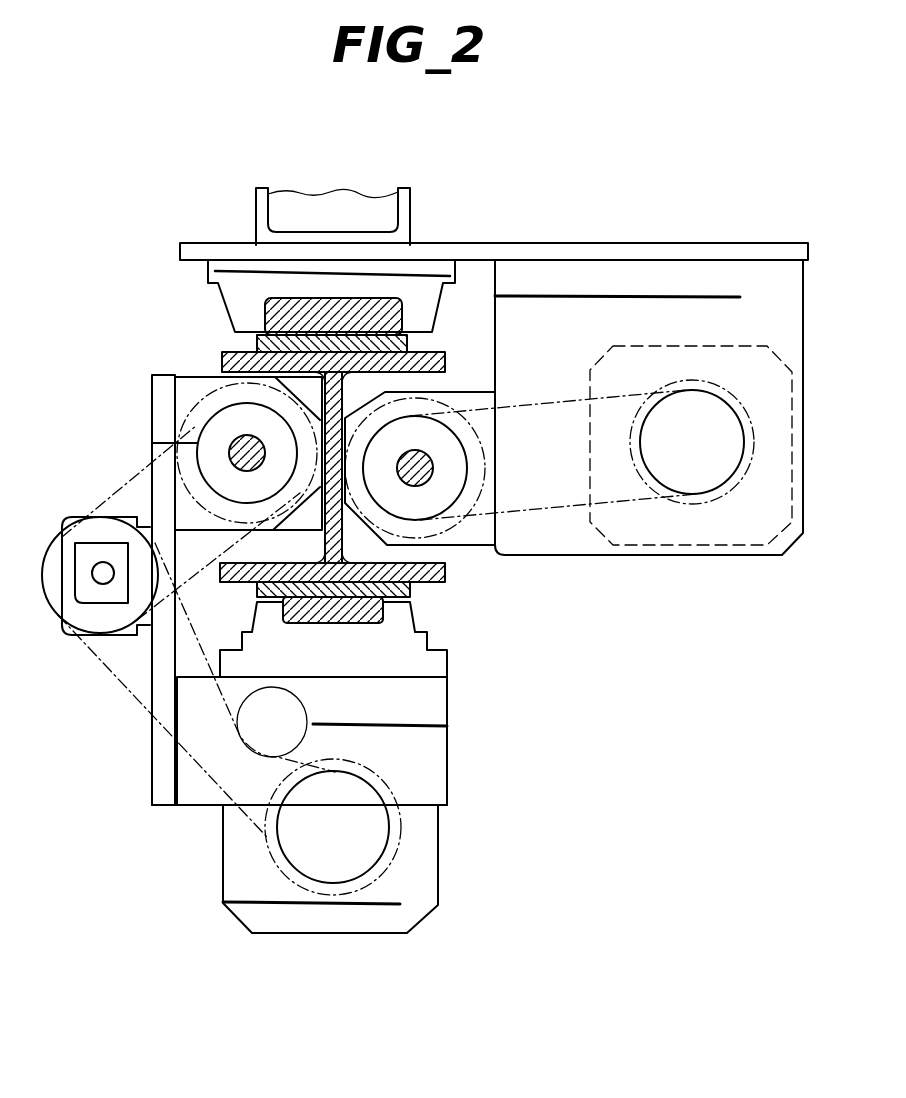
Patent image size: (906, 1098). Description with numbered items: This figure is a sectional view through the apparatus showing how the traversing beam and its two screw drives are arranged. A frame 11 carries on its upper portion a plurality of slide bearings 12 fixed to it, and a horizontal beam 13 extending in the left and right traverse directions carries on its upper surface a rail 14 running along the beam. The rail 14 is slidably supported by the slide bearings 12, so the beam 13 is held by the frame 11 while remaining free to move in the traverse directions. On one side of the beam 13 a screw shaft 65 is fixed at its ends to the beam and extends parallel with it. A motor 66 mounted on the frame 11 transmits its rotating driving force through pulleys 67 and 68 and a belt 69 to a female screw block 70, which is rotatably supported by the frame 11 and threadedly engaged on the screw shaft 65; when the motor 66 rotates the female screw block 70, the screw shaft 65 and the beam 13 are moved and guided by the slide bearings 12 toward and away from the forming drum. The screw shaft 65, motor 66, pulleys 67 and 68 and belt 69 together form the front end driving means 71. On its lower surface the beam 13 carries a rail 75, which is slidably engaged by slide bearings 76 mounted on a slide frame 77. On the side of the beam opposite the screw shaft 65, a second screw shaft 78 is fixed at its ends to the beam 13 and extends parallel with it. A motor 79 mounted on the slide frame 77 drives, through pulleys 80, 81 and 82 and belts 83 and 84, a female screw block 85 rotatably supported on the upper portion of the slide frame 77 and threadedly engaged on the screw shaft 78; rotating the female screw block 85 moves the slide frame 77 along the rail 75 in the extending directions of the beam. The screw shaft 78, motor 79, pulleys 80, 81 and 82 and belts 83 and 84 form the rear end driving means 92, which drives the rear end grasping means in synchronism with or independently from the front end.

The frame 11 is at (403, 208).
The slide bearings 12 is at (232, 301).
The horizontal beam 13 is at (222, 358).
The rail 14 is at (383, 303).
The screw shaft 65 is at (415, 451).
The motor 66 is at (745, 475).
The pulley 67 is at (712, 392).
The pulley 68 is at (492, 455).
The belt 69 is at (528, 514).
The female screw block 70 is at (455, 535).
The front end driving means 71 is at (673, 562).
The rail 75 is at (413, 615).
The slide bearings 76 is at (425, 637).
The slide frame 77 is at (447, 757).
The screw shaft 78 is at (248, 436).
The motor 79 is at (400, 830).
The pulley 80 is at (383, 855).
The pulley 81 is at (73, 623).
The pulley 82 is at (152, 443).
The belt 83 is at (135, 692).
The belt 84 is at (120, 486).
The female screw block 85 is at (197, 400).
The rear end driving means 92 is at (185, 814).